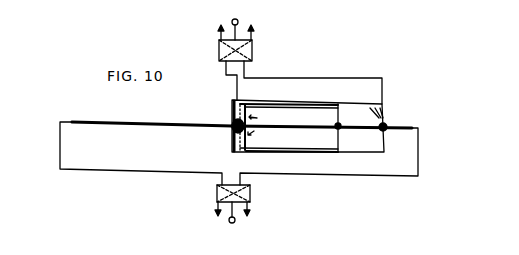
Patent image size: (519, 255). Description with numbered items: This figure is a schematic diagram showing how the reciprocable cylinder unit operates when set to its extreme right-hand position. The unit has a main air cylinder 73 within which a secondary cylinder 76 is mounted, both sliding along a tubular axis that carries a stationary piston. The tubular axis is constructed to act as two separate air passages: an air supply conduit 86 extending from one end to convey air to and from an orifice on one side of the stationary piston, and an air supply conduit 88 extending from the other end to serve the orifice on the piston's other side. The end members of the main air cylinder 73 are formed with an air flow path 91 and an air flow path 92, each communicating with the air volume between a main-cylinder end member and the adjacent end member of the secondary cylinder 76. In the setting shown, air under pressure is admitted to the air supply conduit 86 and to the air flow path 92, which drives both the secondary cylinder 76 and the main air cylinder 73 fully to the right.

The main air cylinder 73 is at (331, 106).
The secondary cylinder 76 is at (341, 137).
The air supply conduit 86 is at (414, 129).
The air supply conduit 88 is at (63, 120).
The air flow path 91 is at (236, 88).
The air flow path 92 is at (384, 94).